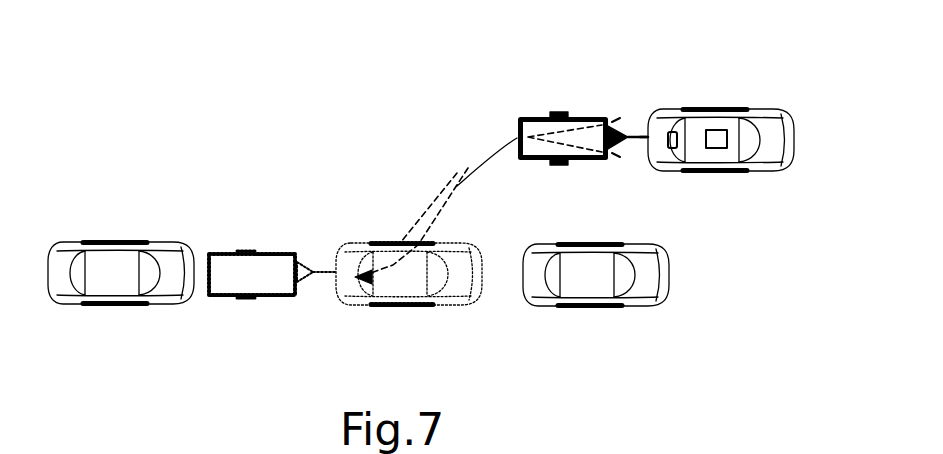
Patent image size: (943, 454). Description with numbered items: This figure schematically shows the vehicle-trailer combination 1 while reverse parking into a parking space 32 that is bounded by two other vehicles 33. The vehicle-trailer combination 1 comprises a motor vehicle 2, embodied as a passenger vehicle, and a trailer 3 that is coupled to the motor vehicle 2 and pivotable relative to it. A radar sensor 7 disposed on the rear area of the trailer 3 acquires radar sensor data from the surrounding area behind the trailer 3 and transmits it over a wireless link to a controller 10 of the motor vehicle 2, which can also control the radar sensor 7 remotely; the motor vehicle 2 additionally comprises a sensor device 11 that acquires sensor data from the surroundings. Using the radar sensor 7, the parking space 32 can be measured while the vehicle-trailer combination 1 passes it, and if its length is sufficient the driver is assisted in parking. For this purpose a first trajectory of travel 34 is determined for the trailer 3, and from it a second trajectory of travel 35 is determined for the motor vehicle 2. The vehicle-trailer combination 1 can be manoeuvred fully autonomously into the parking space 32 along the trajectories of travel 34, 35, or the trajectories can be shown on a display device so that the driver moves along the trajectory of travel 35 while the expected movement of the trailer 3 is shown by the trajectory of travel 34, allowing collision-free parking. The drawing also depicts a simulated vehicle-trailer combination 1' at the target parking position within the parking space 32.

The vehicle-trailer combination 1 is at (660, 74).
The simulated vehicle-trailer combination 1' is at (282, 223).
The motor vehicle 2 is at (730, 109).
The trailer 3 is at (593, 116).
The radar sensor 7 is at (517, 150).
The controller 10 is at (713, 150).
The sensor device 11 is at (677, 130).
The parking space 32 is at (500, 280).
The other vehicles 33 is at (110, 305).
The first trajectory of travel 34 is at (454, 192).
The second trajectory of travel 35 is at (452, 187).